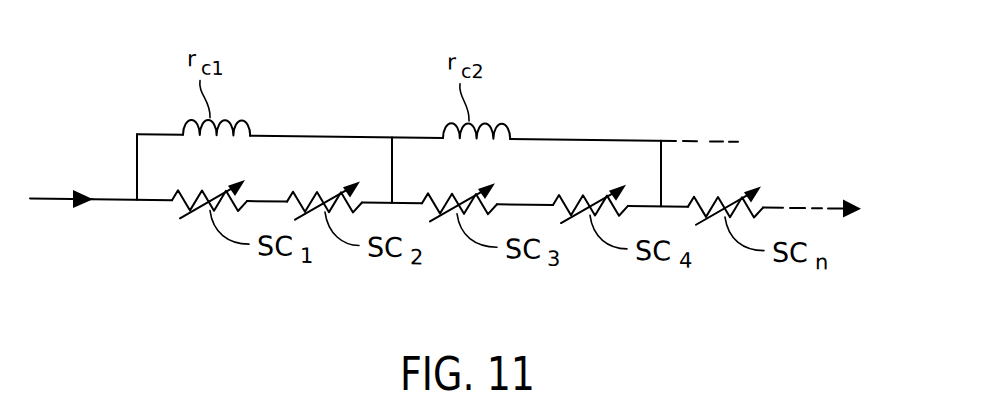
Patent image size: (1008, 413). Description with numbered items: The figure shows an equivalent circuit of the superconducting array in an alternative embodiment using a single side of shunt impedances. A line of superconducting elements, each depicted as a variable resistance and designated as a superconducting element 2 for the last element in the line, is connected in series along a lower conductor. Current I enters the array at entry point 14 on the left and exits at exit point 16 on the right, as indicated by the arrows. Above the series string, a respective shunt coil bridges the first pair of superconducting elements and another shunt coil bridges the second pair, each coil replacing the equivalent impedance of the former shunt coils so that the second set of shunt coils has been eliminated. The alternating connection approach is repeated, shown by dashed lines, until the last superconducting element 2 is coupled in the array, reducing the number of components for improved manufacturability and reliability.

The superconducting element 2 is at (730, 171).
The current entry point 14 is at (58, 196).
The current exit point 16 is at (822, 200).